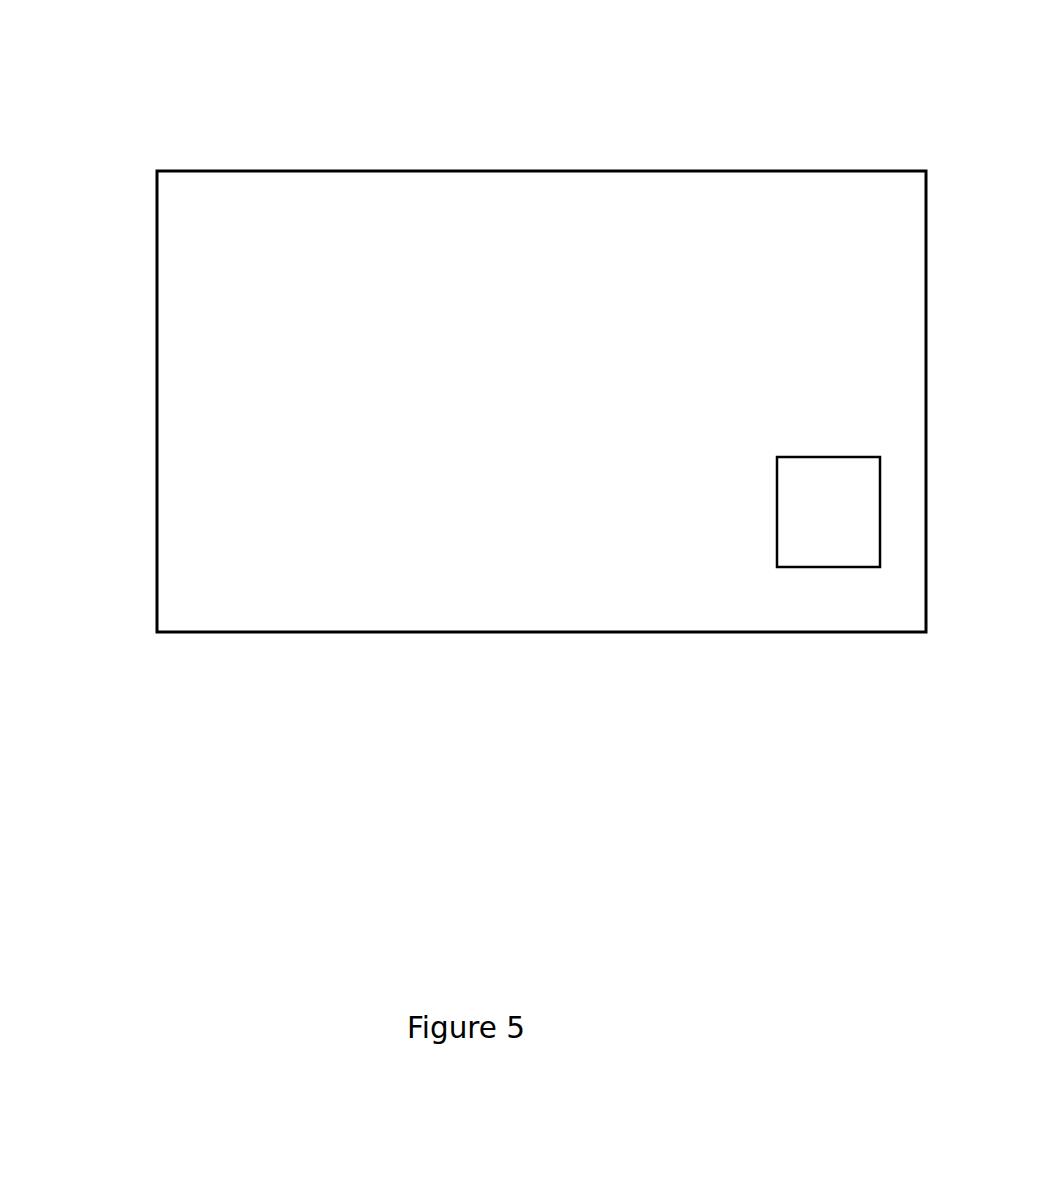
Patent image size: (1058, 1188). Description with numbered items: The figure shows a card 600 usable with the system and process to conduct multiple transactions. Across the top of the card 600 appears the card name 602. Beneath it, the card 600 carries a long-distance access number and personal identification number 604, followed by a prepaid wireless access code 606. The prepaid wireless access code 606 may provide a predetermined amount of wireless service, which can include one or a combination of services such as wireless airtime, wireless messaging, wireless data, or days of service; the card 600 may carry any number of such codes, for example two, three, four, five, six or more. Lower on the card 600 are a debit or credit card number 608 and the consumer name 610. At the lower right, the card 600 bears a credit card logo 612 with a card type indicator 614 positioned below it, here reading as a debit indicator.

The card 600 is at (762, 208).
The card name 602 is at (402, 217).
The long-distance access number and personal identification number 604 is at (183, 300).
The prepaid wireless access code 606 is at (208, 377).
The debit or credit card number 608 is at (185, 542).
The consumer name 610 is at (180, 603).
The credit card logo 612 is at (740, 553).
The card type indicator 614 is at (837, 617).